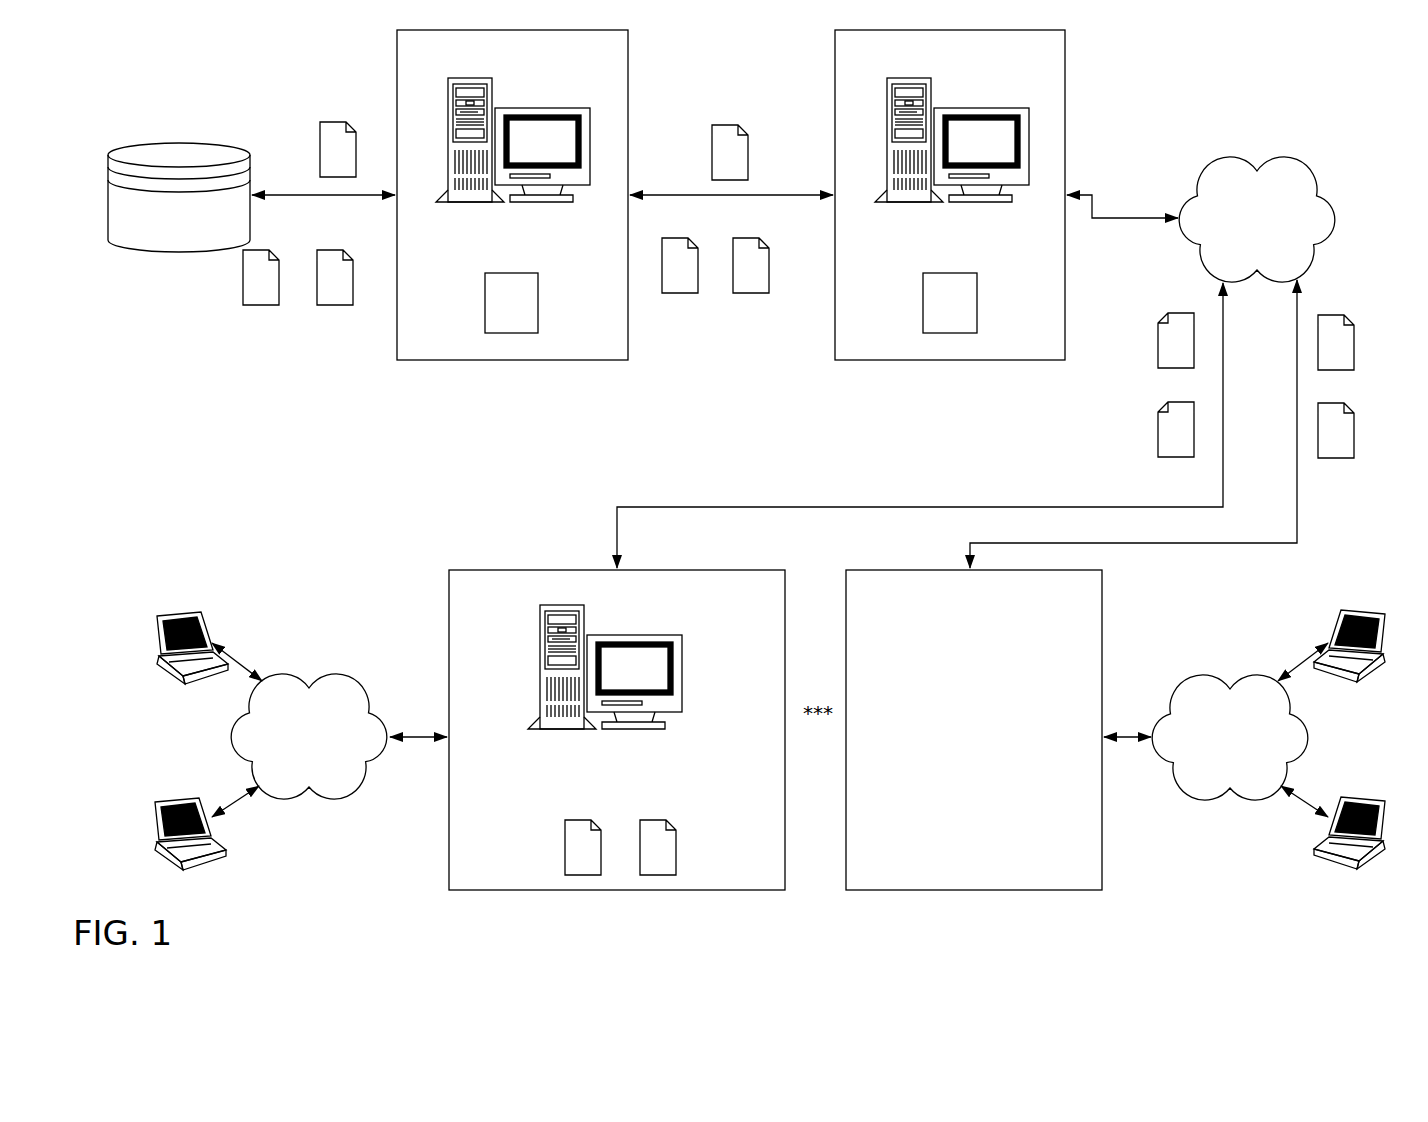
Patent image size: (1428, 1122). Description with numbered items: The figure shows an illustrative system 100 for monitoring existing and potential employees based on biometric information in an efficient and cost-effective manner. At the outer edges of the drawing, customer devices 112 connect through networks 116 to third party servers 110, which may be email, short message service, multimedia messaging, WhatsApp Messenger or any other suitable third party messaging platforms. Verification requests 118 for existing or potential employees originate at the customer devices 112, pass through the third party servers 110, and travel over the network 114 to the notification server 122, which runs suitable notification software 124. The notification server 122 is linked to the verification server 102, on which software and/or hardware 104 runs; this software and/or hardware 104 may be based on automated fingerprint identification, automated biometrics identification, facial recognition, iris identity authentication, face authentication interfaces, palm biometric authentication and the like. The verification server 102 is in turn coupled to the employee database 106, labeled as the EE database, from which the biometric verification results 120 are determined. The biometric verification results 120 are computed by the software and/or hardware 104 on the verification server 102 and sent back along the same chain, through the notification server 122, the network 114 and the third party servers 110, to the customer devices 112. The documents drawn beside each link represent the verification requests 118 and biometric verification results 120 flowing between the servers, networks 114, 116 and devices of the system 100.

The system 100 is at (1320, 947).
The verification server 102 is at (606, 74).
The software and/or hardware 104 is at (485, 275).
The employee database 106 is at (176, 240).
The third party servers 110 is at (765, 607).
The customer devices 112 is at (178, 612).
The network 114 is at (1333, 196).
The network 116 is at (333, 675).
The verification requests 118 is at (258, 250).
The biometric verification results 120 is at (337, 122).
The notification server 122 is at (1045, 74).
The notification software 124 is at (923, 275).